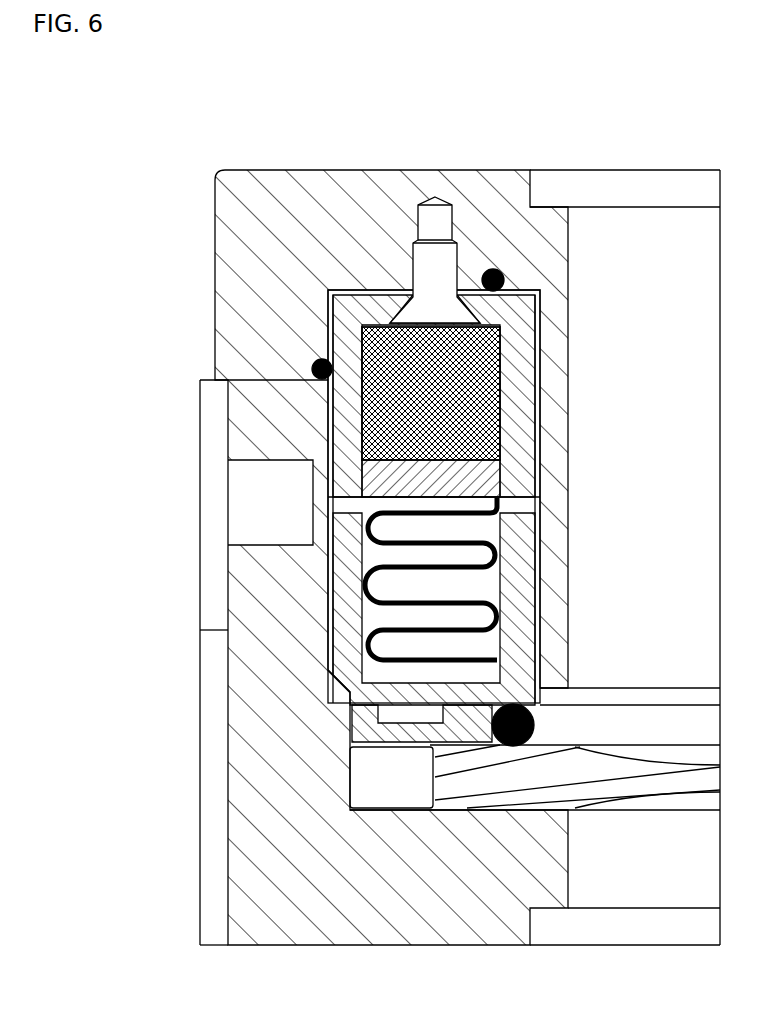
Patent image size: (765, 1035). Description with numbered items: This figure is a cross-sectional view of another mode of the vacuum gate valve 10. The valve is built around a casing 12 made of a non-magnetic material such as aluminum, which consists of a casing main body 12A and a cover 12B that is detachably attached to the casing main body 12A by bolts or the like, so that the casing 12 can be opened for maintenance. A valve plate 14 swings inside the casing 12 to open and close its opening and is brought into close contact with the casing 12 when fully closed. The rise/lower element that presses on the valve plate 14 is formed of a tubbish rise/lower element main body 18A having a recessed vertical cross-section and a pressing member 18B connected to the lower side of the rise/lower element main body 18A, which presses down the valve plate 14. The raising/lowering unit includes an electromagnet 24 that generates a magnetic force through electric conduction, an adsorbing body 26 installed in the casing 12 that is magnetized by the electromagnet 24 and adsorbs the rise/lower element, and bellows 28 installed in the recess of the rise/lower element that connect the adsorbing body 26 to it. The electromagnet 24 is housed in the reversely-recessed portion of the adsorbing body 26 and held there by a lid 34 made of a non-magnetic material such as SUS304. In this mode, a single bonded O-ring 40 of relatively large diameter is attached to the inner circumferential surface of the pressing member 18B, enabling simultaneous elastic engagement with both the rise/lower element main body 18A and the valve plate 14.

The vacuum gate valve 10 is at (192, 162).
The casing 12 is at (417, 155).
The casing main body 12A is at (260, 895).
The cover 12B is at (350, 197).
The valve plate 14 is at (458, 780).
The rise/lower element main body 18A is at (540, 660).
The pressing member 18B is at (330, 727).
The electromagnet 24 is at (502, 393).
The adsorbing body 26 is at (518, 322).
The bellows 28 is at (466, 597).
The lid 34 is at (470, 480).
The bonded O-ring 40 is at (523, 747).